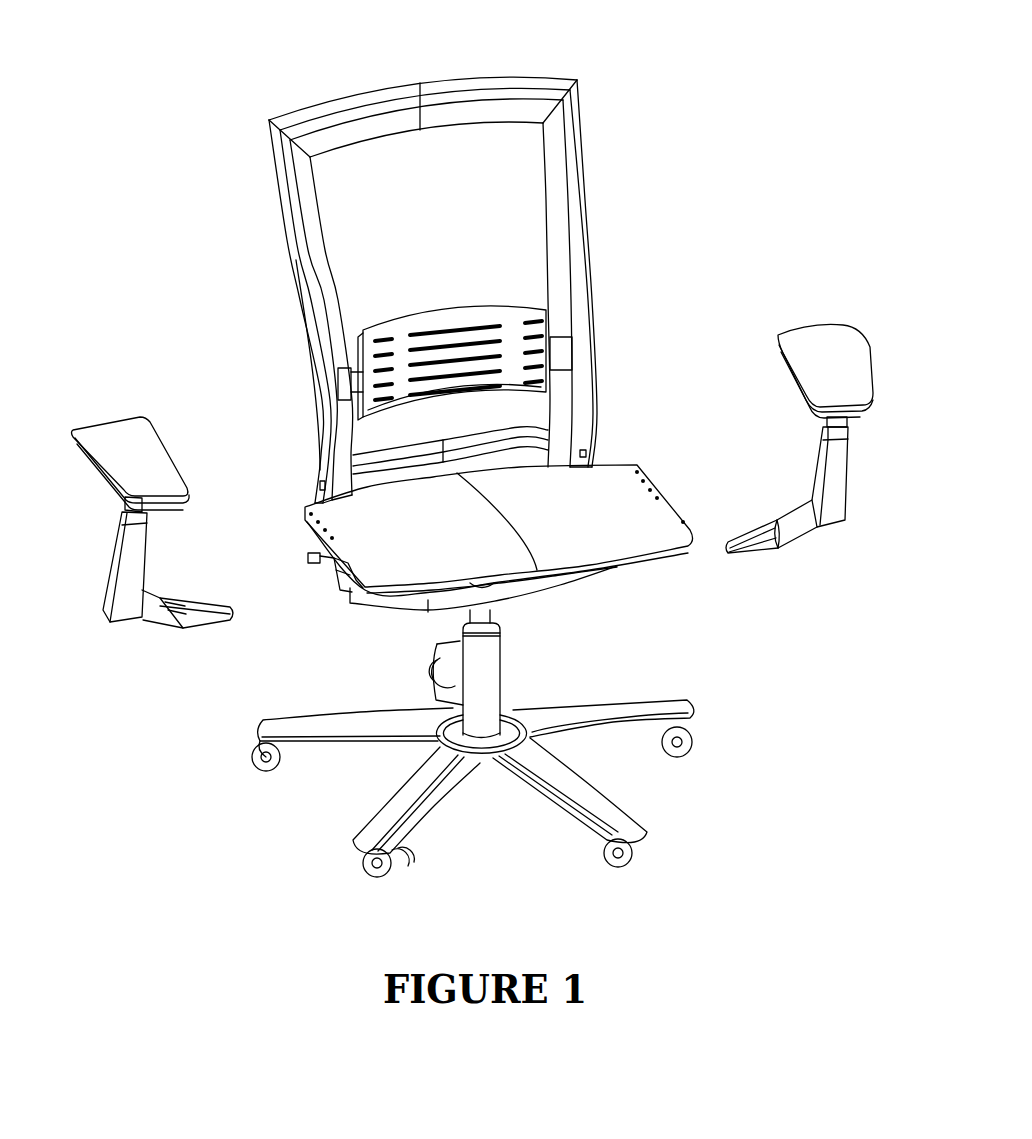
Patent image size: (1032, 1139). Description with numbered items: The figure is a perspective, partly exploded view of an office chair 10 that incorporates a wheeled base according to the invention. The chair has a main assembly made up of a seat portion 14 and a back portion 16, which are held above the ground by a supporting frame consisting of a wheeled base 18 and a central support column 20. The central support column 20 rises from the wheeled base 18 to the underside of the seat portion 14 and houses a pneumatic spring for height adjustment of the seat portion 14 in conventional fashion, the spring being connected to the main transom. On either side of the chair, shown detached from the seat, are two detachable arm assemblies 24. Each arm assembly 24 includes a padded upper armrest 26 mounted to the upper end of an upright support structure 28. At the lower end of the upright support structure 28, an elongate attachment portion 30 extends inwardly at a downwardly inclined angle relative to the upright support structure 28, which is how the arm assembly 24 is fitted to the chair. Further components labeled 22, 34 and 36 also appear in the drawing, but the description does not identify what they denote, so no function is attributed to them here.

The office chair 10 is at (760, 117).
The seat portion 14 is at (670, 540).
The back portion 16 is at (558, 197).
The wheeled base 18 is at (613, 817).
The central support column 20 is at (478, 677).
The left armrest assembly 22 is at (153, 522).
The detachable arm assembly 24 is at (875, 285).
The upper armrest 26 is at (832, 353).
The upright support structure 28 is at (837, 483).
The elongate attachment portion 30 is at (757, 550).
The back frame side member 34 is at (303, 293).
The lumbar support 36 is at (513, 320).